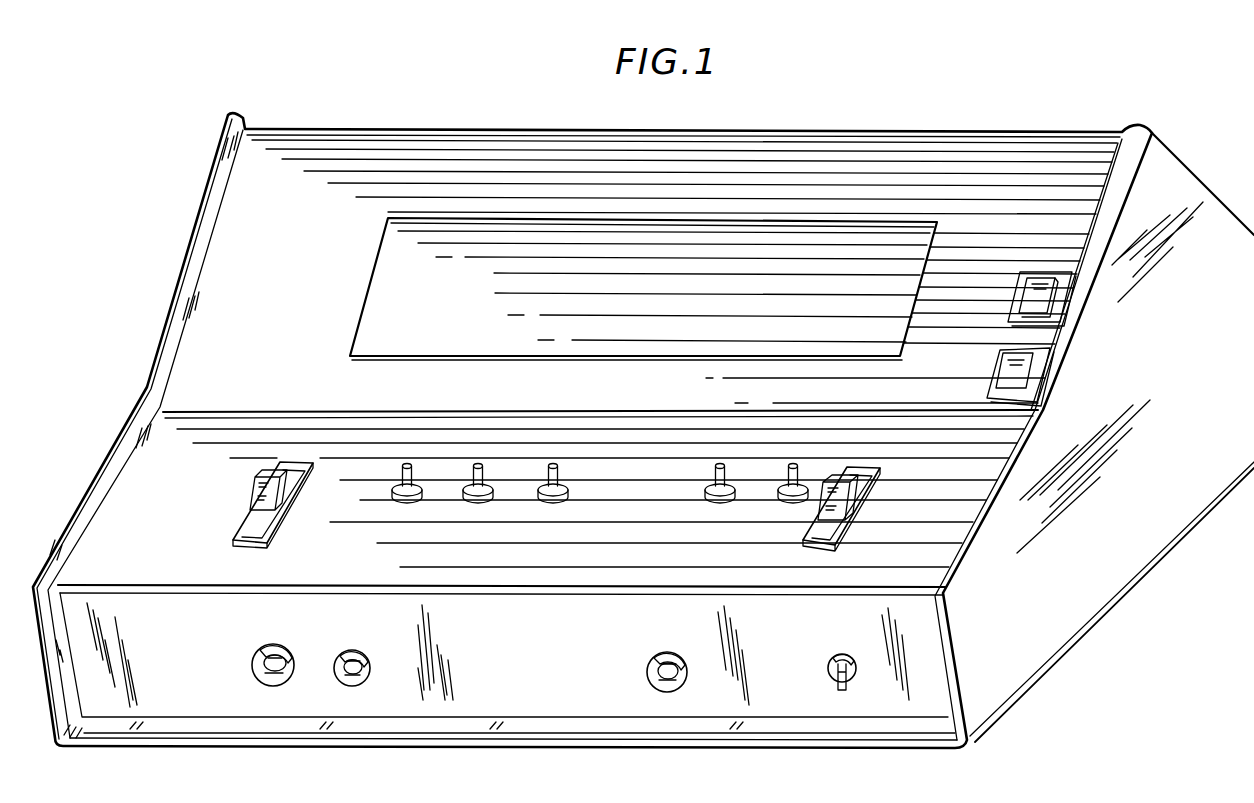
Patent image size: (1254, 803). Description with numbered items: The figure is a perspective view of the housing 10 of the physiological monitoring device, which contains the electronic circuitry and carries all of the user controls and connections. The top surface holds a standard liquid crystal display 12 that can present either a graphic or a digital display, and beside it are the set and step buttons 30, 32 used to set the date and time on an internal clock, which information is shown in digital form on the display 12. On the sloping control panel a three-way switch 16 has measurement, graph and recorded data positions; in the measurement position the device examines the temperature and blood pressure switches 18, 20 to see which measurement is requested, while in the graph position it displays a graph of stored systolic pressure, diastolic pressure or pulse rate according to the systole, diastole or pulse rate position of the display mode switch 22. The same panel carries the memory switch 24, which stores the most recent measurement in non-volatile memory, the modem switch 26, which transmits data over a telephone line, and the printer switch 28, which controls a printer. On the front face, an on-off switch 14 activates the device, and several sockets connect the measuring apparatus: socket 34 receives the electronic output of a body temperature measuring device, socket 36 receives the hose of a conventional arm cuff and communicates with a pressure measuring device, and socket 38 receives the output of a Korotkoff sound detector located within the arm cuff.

The housing 10 is at (1150, 128).
The liquid crystal display 12 is at (392, 250).
The on-off switch 14 is at (848, 684).
The three-way switch 16 is at (300, 463).
The temperature switch 18 is at (718, 503).
The blood pressure switch 20 is at (788, 503).
The display mode switch 22 is at (826, 546).
The memory switch 24 is at (551, 503).
The modem switch 26 is at (467, 500).
The printer switch 28 is at (400, 500).
The set button 30 is at (1014, 297).
The step button 32 is at (1000, 358).
The temperature probe socket 34 is at (684, 681).
The arm cuff socket 36 is at (256, 666).
The Korotkoff sound detector socket 38 is at (366, 677).